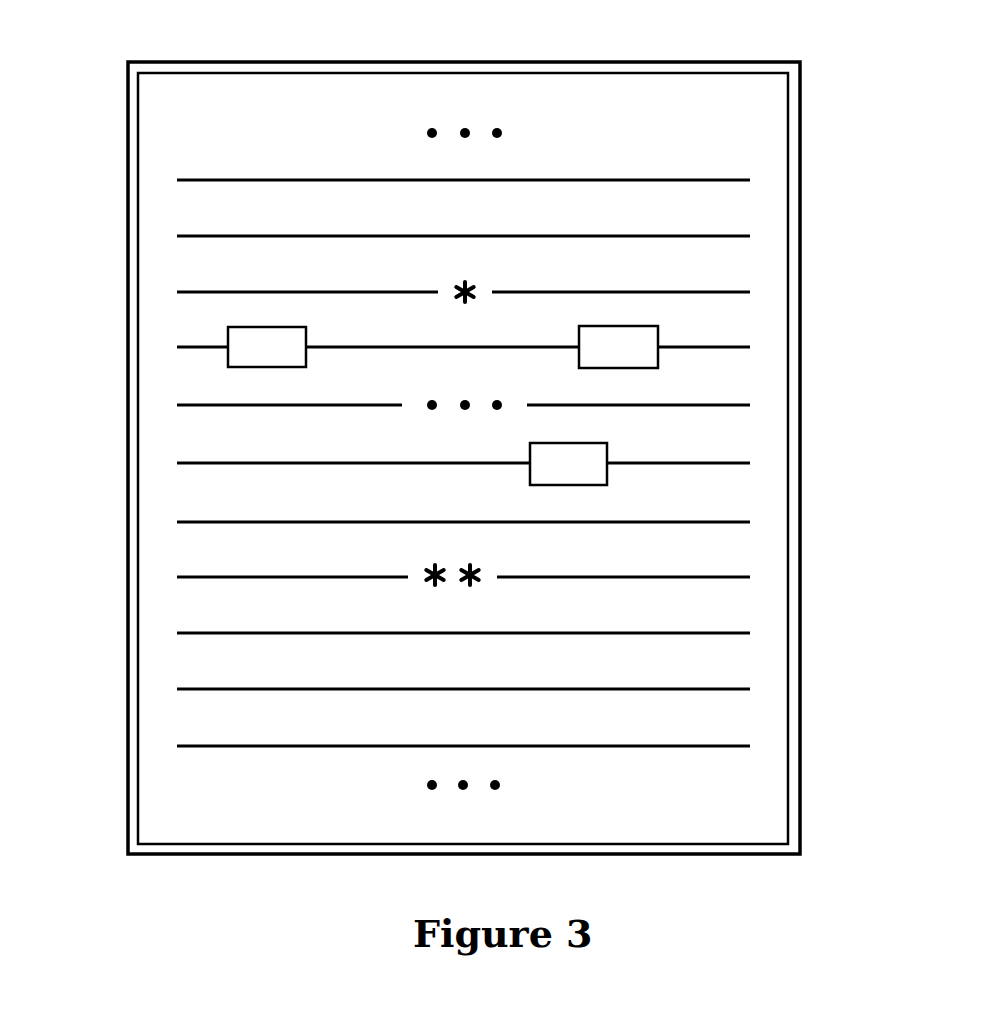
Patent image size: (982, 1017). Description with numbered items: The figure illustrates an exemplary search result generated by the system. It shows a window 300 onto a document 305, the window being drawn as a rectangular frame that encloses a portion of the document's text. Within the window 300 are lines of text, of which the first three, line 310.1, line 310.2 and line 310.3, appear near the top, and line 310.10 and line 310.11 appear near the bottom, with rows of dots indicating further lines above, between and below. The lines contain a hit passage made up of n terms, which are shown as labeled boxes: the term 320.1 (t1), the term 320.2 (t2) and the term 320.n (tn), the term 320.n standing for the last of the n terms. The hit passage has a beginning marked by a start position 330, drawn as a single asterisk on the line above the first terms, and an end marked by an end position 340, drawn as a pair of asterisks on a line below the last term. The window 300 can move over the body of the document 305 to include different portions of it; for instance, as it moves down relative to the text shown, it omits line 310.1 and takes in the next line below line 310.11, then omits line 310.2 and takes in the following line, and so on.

The window 300 is at (656, 878).
The document 305 is at (341, 130).
The line of text 310.1 is at (728, 176).
The line of text 310.2 is at (728, 232).
The line of text 310.3 is at (728, 288).
The line of text 310.10 is at (726, 684).
The line of text 310.11 is at (726, 740).
The term 320.1 is at (251, 322).
The term 320.2 is at (633, 321).
The term 320.n is at (600, 437).
The start position 330 is at (449, 282).
The end position 340 is at (428, 592).